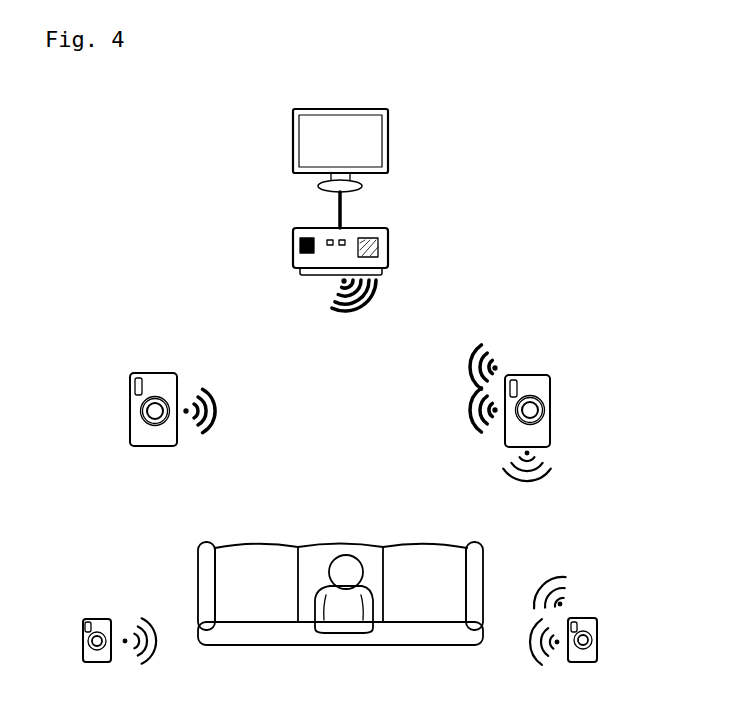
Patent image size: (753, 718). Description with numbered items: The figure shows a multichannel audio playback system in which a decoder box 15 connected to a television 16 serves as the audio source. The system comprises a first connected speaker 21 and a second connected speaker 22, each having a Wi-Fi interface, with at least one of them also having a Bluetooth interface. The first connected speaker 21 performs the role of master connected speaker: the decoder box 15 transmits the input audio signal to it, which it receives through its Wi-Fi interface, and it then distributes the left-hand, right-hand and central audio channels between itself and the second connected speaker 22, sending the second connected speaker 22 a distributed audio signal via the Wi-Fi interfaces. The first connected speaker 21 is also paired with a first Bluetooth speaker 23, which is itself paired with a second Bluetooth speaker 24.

The decoder box 15 is at (388, 248).
The television 16 is at (378, 142).
The first connected speaker 21 is at (550, 408).
The second connected speaker 22 is at (130, 408).
The first Bluetooth speaker 23 is at (597, 650).
The second Bluetooth speaker 24 is at (92, 618).